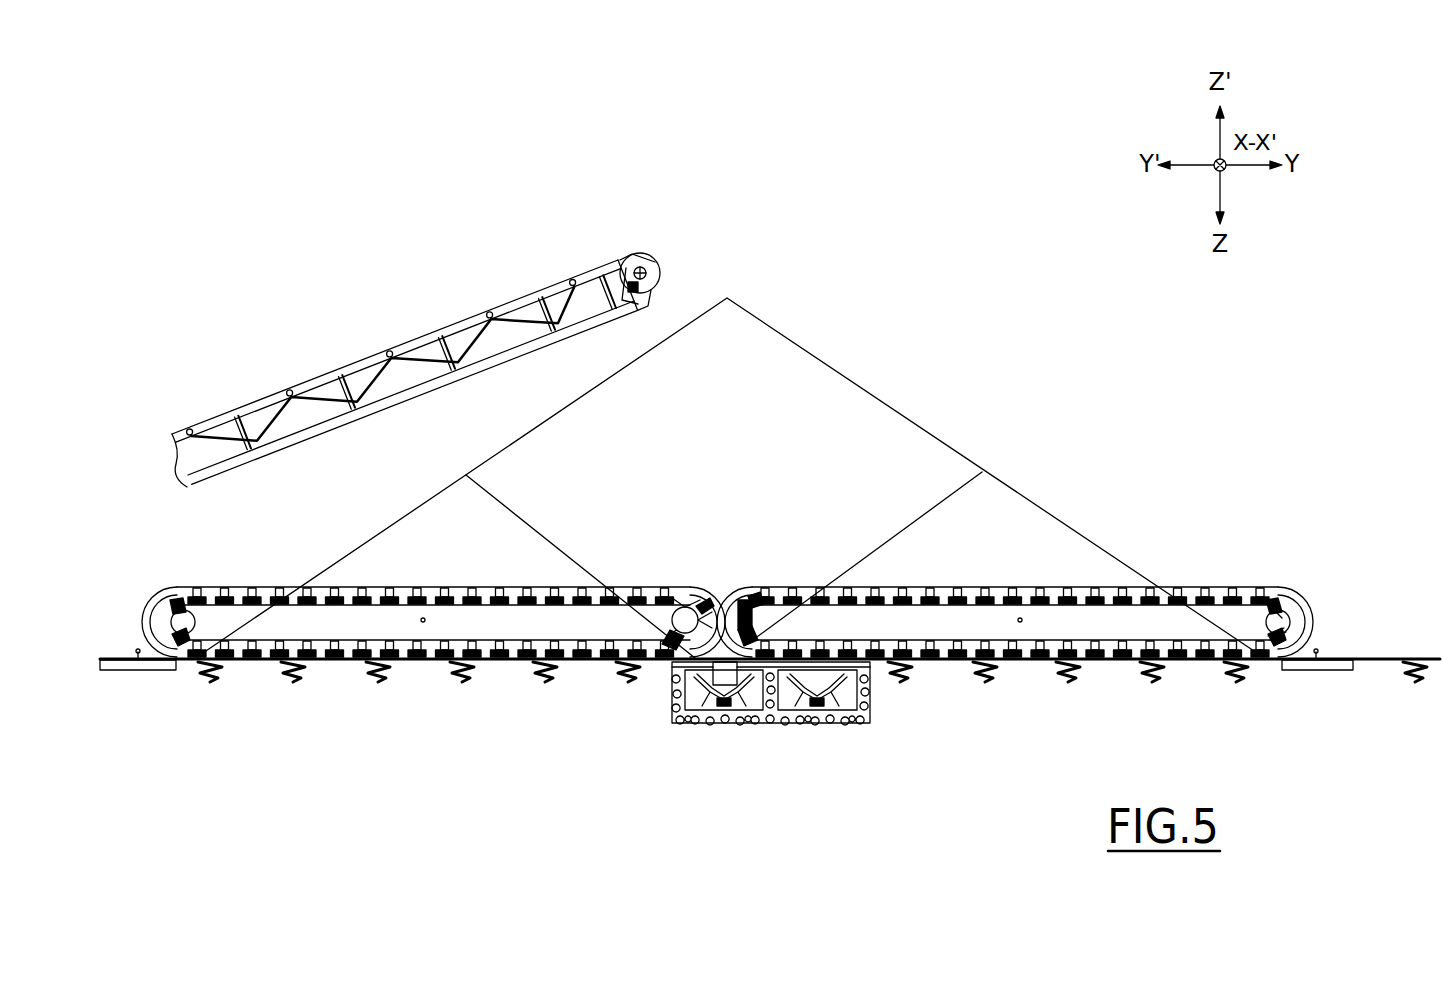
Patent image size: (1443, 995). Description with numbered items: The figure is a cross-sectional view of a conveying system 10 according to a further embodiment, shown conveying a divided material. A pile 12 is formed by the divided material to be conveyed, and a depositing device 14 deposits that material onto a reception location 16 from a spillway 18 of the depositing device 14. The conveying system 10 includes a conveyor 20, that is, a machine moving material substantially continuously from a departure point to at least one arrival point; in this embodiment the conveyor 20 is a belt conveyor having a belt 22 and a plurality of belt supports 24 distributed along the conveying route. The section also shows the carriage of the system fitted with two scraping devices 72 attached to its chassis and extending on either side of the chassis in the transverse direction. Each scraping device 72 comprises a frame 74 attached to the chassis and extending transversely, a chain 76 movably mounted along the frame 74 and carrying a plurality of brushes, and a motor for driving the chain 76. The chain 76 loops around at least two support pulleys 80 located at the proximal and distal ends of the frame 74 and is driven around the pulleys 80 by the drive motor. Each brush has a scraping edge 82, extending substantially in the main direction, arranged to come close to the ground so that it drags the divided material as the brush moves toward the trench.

The conveying system 10 is at (766, 517).
The pile 12 is at (852, 370).
The depositing device 14 is at (346, 350).
The reception location 16 is at (770, 699).
The spillway 18 is at (668, 248).
The conveyor 20 is at (802, 753).
The belt 22 is at (728, 720).
The belt supports 24 is at (870, 700).
The scraping device 72 is at (1210, 560).
The frame 74 is at (1265, 590).
The chain 76 is at (1152, 590).
The support pulleys 80 is at (762, 620).
The scraping edge 82 is at (1025, 587).